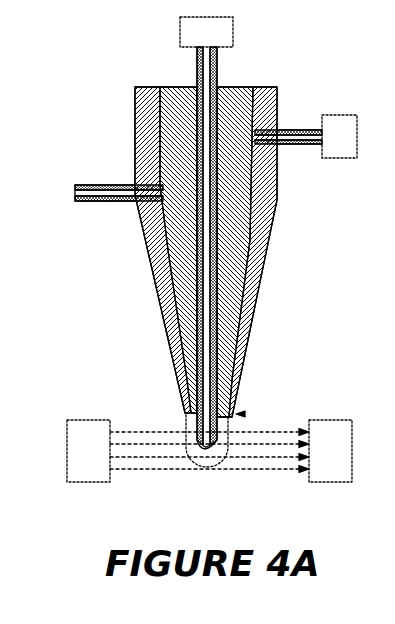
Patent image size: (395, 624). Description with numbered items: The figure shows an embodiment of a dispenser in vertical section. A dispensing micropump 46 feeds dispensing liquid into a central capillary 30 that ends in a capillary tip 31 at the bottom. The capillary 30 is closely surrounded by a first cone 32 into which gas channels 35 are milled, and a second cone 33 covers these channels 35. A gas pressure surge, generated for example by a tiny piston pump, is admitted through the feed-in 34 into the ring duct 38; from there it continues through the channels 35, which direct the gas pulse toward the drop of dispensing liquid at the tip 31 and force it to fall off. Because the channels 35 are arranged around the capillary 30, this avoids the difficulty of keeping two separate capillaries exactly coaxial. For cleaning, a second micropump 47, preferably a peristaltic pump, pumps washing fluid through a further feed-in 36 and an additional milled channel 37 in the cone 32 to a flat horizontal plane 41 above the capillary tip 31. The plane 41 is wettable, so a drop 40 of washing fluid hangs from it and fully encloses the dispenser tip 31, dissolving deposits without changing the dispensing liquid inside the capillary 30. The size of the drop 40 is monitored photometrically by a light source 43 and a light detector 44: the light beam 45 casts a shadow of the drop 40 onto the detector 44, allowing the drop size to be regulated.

The capillary 30 is at (220, 248).
The capillary tip 31 is at (226, 456).
The first cone 32 is at (178, 239).
The second cone 33 is at (165, 239).
The feed-in 34 is at (105, 192).
The gas channels 35 is at (146, 242).
The further feed-in 36 is at (288, 127).
The channel 37 is at (231, 225).
The ring duct 38 is at (262, 192).
The drop of washing fluid 40 is at (184, 465).
The horizontal plane 41 is at (245, 414).
The light source 43 is at (88, 451).
The light detector 44 is at (330, 451).
The light beam 45 is at (209, 451).
The dispensing micropump 46 is at (206, 32).
The micropump 47 is at (339, 136).